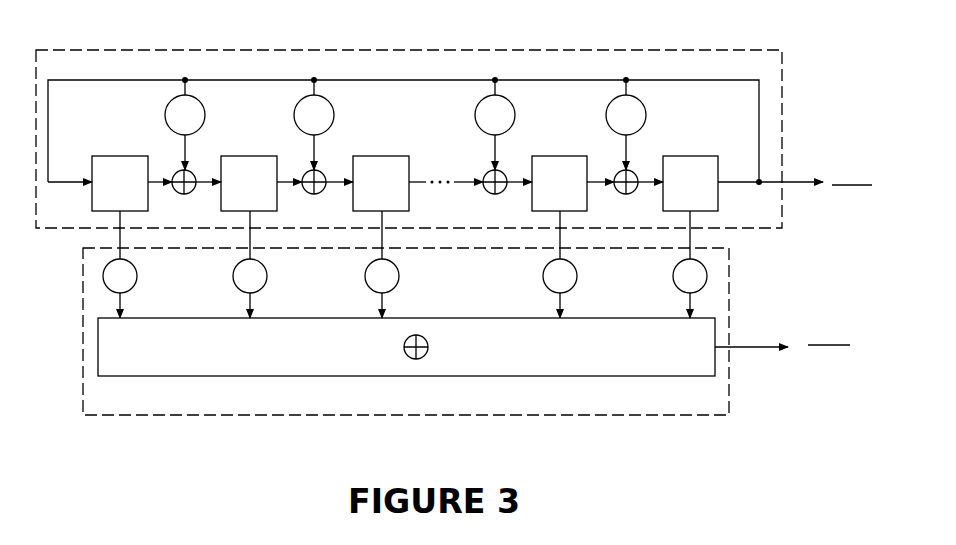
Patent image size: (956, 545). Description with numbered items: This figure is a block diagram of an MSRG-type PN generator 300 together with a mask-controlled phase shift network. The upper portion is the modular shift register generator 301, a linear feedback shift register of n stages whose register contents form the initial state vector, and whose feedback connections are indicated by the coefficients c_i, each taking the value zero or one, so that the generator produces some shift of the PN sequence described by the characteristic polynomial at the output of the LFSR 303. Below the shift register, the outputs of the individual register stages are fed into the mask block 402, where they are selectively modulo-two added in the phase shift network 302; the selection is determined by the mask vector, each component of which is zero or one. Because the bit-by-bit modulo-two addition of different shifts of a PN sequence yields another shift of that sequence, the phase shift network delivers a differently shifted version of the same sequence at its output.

The pseudo-noise sequence generator 300 is at (453, 212).
The modular shift register generator 301 is at (692, 50).
The mask-controlled phase shift network 302 is at (825, 375).
The output of the LFSR 303 is at (858, 148).
The mask / phase shift network 402 is at (82, 325).